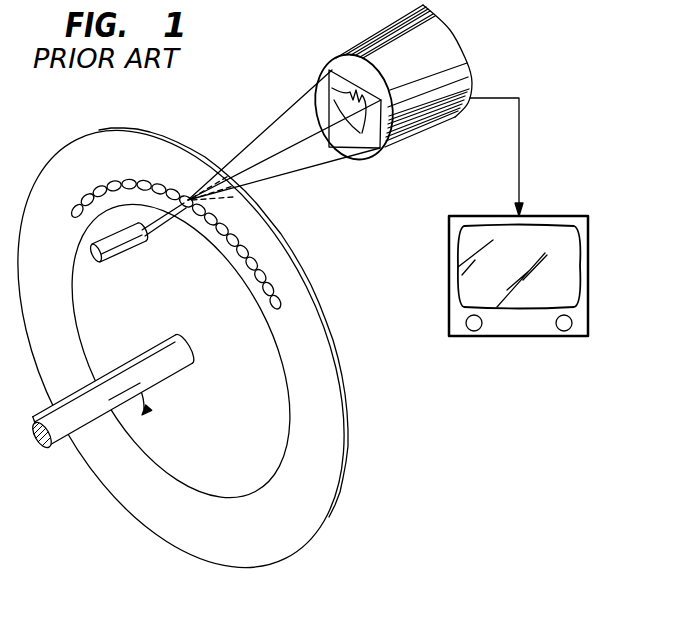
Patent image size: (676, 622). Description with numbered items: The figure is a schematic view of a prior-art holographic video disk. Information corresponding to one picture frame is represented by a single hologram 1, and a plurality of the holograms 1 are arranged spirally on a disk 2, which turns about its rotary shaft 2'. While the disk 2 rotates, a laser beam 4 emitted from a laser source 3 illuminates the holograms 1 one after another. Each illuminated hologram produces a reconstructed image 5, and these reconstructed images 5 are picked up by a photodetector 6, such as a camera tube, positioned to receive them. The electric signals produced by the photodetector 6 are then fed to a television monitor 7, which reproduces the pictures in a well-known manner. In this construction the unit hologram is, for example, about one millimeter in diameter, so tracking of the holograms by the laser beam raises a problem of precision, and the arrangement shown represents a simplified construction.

The hologram 1 is at (185, 196).
The disk 2 is at (205, 349).
The rotary shaft 2' is at (111, 415).
The laser source 3 is at (118, 256).
The laser beam 4 is at (162, 224).
The reconstructed image 5 is at (358, 134).
The photodetector 6 is at (455, 48).
The television monitor 7 is at (589, 322).